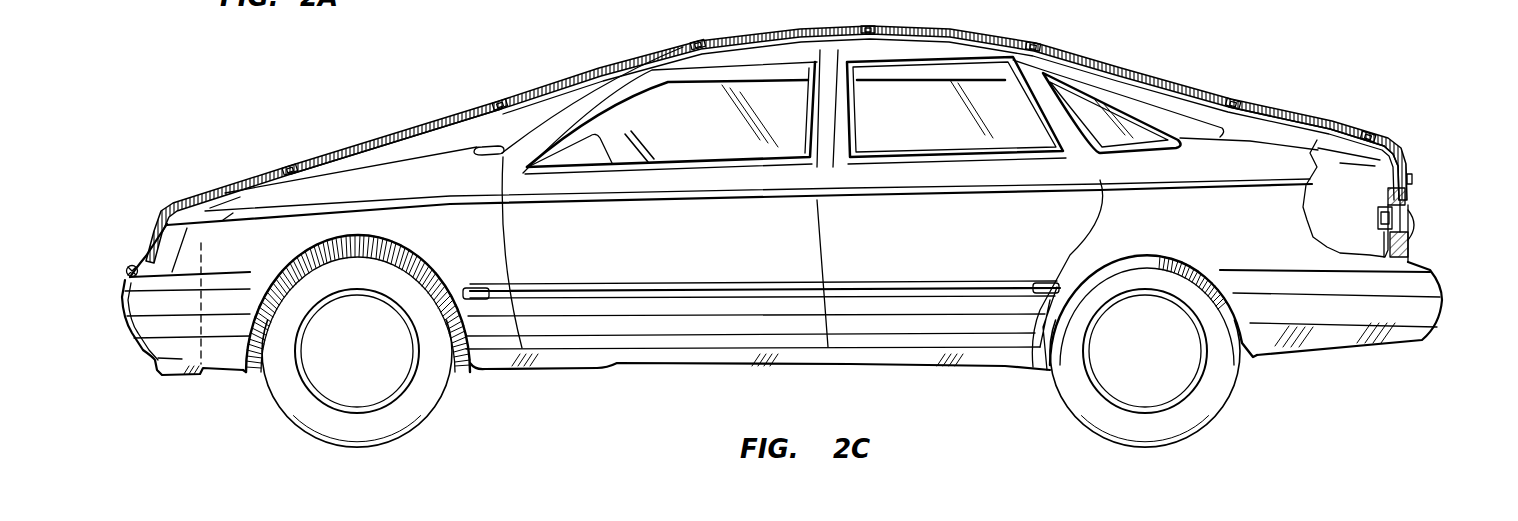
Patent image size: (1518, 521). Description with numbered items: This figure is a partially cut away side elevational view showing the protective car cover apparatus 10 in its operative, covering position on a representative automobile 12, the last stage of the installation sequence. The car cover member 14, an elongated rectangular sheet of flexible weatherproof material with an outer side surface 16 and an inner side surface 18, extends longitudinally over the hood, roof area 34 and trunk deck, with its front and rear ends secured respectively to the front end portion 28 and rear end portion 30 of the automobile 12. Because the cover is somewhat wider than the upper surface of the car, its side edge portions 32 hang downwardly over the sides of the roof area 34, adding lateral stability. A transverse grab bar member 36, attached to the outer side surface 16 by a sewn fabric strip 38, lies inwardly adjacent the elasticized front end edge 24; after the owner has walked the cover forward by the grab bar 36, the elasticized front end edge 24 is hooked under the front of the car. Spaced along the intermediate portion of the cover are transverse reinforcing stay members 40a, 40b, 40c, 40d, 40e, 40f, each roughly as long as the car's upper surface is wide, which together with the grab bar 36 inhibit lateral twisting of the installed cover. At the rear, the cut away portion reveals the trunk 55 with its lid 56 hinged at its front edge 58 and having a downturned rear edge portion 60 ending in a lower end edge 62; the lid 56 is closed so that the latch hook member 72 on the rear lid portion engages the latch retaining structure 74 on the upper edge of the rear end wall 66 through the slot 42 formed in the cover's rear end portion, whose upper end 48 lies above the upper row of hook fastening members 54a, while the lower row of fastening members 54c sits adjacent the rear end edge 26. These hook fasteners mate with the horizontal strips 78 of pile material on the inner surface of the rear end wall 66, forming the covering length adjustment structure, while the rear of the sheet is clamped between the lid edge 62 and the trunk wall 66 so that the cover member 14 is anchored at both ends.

The protective car cover apparatus 10 is at (1105, 52).
The automobile 12 is at (952, 250).
The car cover member 14 is at (924, 30).
The outer side surface 16 is at (397, 132).
The inner side surface 18 is at (422, 144).
The elasticized front end edge 24 is at (201, 376).
The rear end edge 26 is at (1380, 227).
The front end portion 28 is at (143, 327).
The rear end portion 30 is at (1425, 305).
The side edge portions 32 is at (920, 76).
The roof area 34 is at (790, 41).
The grab bar member 36 is at (127, 266).
The fabric strip 38 is at (134, 257).
The reinforcing stay member 40a is at (287, 166).
The reinforcing stay member 40b is at (516, 70).
The reinforcing stay member 40c is at (696, 40).
The reinforcing stay member 40d is at (866, 26).
The reinforcing stay member 40e is at (1034, 43).
The reinforcing stay member 40f is at (1234, 100).
The slot 42 is at (1345, 132).
The upper end of slot 48 is at (1293, 120).
The fastening members 54a is at (1369, 133).
The fastening members 54c is at (1413, 179).
The trunk 55 is at (1365, 170).
The trunk lid 56 is at (1318, 138).
The front edge 58 is at (1247, 142).
The downturned rear edge portion 60 is at (1403, 166).
The lower end edge 62 is at (1406, 197).
The rear end wall 66 is at (1410, 243).
The latch hook member 72 is at (1411, 217).
The latch retaining structure 74 is at (1417, 224).
The strips of fastening pile material 78 is at (1387, 232).